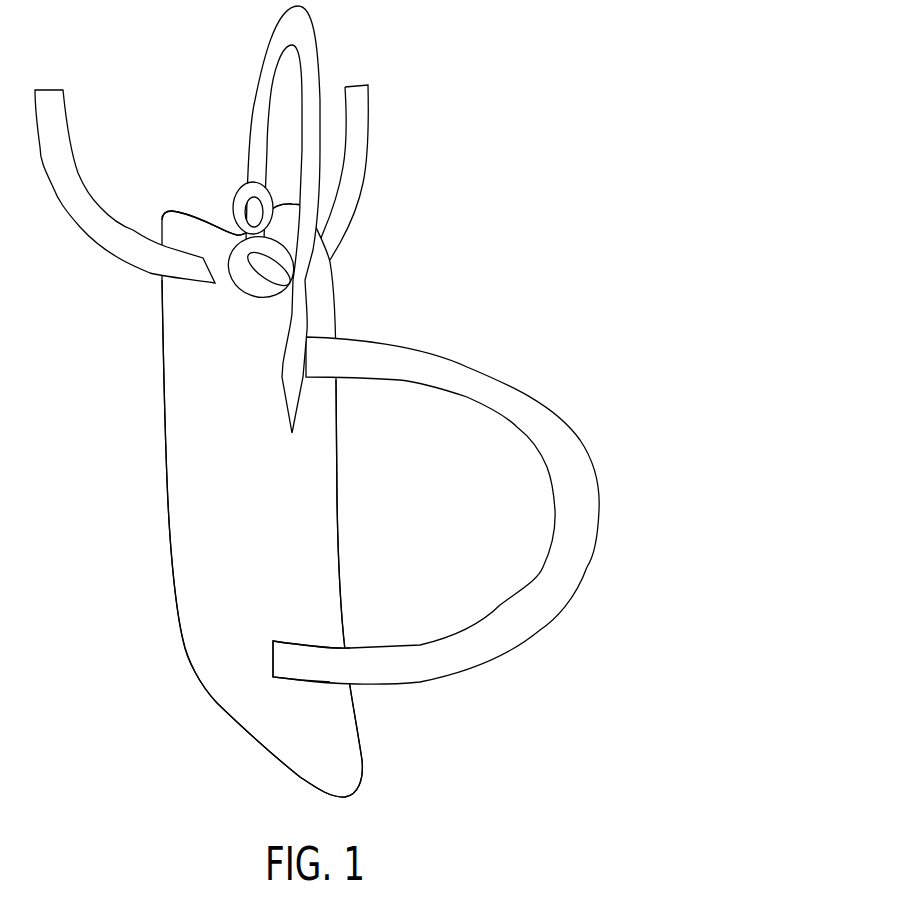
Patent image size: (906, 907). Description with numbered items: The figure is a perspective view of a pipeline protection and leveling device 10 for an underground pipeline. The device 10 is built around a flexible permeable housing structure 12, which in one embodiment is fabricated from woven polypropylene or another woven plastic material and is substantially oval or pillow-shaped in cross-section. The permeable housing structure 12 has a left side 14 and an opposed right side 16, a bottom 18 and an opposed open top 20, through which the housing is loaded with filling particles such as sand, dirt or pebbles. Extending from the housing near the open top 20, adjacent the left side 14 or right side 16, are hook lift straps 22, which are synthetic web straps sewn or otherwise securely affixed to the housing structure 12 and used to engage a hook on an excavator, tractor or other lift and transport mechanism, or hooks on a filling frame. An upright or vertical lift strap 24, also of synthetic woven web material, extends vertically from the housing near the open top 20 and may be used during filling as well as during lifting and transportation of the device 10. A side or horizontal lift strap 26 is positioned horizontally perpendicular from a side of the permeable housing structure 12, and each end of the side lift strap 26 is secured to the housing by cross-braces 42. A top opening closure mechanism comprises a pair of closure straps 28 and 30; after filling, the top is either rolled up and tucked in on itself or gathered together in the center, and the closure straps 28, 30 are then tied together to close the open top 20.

The pipeline protection and leveling device 10 is at (500, 138).
The permeable housing structure 12 is at (183, 573).
The left side 14 is at (165, 480).
The right side 16 is at (337, 498).
The bottom 18 is at (252, 743).
The open top 20 is at (192, 230).
The hook lift strap 22 is at (242, 207).
The upright lift strap 24 is at (298, 23).
The side lift strap 26 is at (532, 403).
The closure strap 28 is at (73, 222).
The closure strap 30 is at (368, 150).
The cross-brace 42 is at (293, 658).